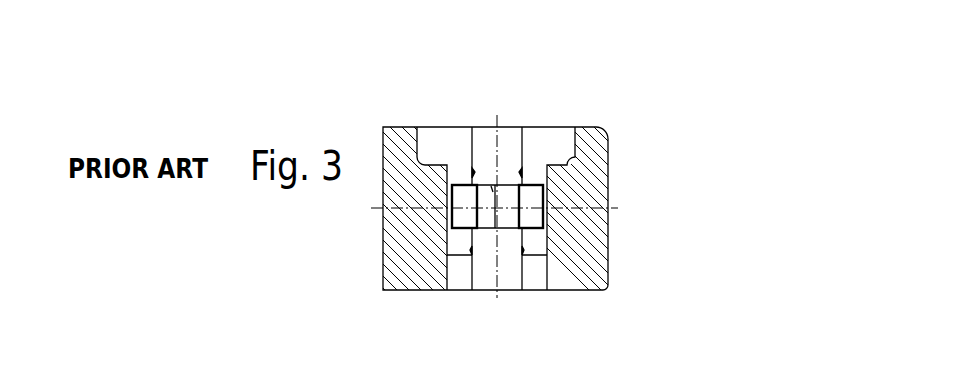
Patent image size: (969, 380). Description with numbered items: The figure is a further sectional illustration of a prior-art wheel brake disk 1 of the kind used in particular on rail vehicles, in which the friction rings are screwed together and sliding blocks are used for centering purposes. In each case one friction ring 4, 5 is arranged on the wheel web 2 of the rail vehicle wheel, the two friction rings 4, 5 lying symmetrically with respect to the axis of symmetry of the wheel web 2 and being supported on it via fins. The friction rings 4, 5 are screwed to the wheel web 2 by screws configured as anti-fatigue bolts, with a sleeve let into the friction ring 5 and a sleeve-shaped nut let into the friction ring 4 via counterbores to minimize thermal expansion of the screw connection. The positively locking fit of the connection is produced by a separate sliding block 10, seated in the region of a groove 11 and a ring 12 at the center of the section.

The wheel brake disk 1 is at (683, 65).
The wheel web 2 is at (507, 135).
The friction ring 4 is at (408, 260).
The friction ring 5 is at (598, 222).
The sliding block 10 is at (532, 196).
The groove 11 is at (490, 186).
The ring 12 is at (498, 229).